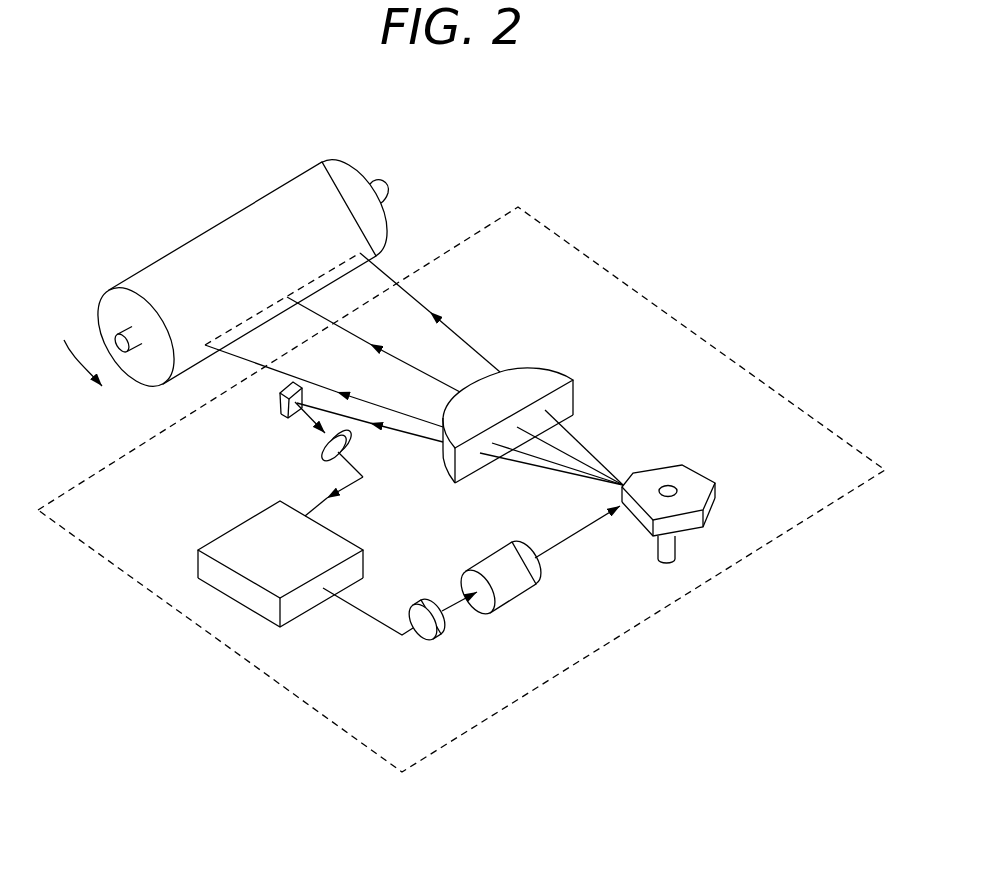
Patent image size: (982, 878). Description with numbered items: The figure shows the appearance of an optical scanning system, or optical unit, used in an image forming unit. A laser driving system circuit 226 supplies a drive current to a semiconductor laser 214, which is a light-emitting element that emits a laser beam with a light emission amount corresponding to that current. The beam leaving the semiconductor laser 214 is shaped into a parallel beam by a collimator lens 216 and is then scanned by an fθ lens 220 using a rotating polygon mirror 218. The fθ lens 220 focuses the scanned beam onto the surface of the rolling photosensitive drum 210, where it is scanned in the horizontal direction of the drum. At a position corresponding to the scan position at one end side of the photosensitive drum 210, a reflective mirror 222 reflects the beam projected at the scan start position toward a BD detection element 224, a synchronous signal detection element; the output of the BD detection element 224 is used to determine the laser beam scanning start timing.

The photosensitive drum 210 is at (170, 252).
The semiconductor laser 214 is at (428, 641).
The collimator lens 216 is at (513, 599).
The rotating polygon mirror 218 is at (692, 480).
The fθ lens 220 is at (527, 379).
The reflective mirror 222 is at (280, 405).
The BD detection element 224 is at (349, 450).
The laser driving system circuit 226 is at (235, 528).